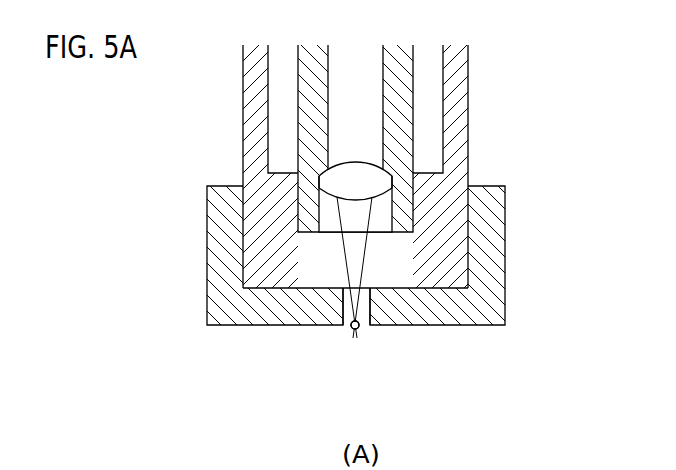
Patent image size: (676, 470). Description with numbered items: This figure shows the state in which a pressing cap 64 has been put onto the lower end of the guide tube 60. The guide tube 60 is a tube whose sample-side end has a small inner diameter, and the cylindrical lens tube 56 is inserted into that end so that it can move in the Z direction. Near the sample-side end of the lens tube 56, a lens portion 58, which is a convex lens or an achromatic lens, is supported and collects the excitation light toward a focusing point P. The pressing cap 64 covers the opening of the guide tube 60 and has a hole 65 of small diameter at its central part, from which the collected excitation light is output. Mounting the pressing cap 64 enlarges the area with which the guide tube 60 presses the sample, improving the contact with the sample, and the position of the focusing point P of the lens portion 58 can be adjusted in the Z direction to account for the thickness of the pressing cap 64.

The lens tube 56 is at (413, 73).
The lens portion 58 is at (357, 160).
The guide tube 60 is at (468, 128).
The pressing cap 64 is at (505, 250).
The hole 65 is at (347, 335).
The focusing point P is at (358, 330).